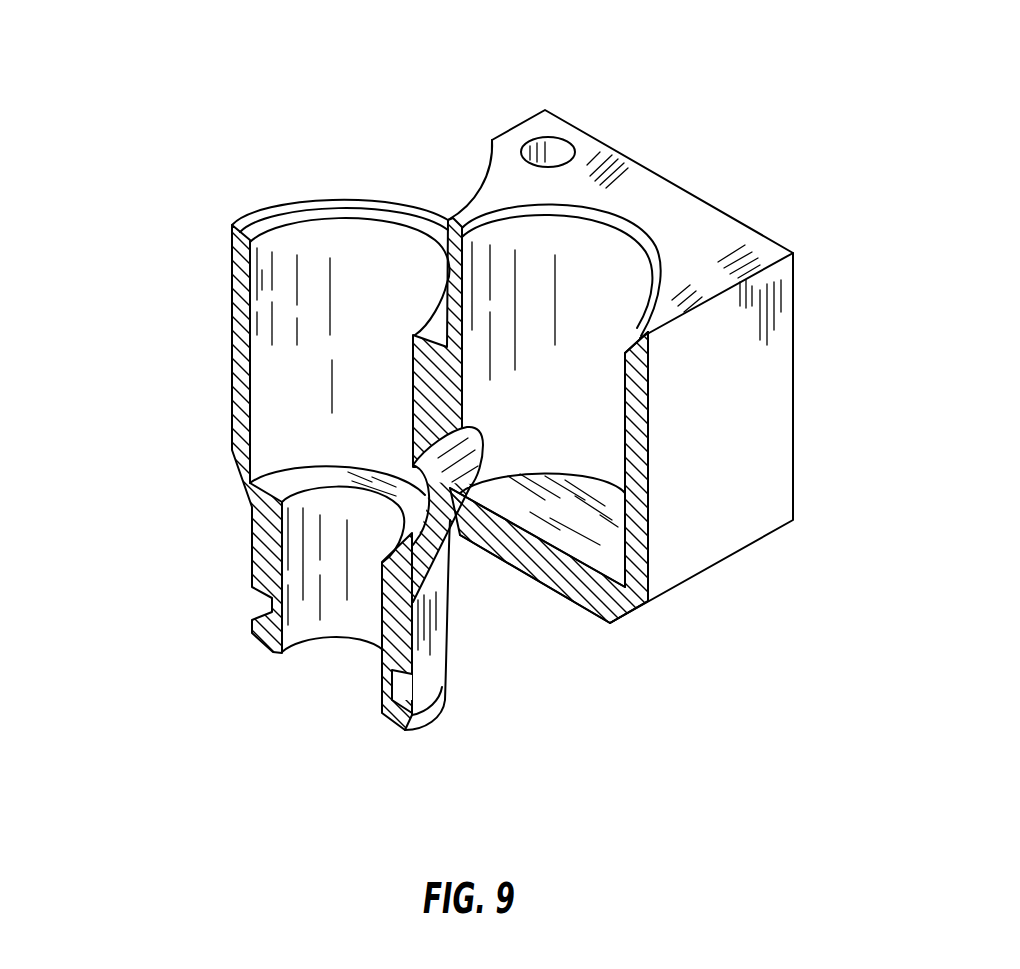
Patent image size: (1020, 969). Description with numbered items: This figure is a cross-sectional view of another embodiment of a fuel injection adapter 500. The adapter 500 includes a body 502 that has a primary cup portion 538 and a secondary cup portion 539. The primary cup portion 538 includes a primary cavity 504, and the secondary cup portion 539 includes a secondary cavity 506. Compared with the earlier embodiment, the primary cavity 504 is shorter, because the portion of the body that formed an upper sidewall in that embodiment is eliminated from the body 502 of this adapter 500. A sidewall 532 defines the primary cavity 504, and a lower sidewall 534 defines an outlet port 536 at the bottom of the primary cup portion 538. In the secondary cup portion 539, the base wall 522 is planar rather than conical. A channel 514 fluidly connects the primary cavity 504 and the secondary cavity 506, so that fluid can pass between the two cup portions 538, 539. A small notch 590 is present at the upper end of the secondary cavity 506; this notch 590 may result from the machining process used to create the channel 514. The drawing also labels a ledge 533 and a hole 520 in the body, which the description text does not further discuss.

The fuel injection adapter 500 is at (714, 88).
The body 502 is at (740, 337).
The primary cavity 504 is at (320, 255).
The secondary cavity 506 is at (575, 243).
The channel 514 is at (443, 494).
The mounting hole 520 is at (603, 262).
The base wall 522 is at (597, 553).
The sidewall 532 is at (323, 363).
The shoulder ledge 533 is at (262, 473).
The lower sidewall 534 is at (325, 627).
The outlet port 536 is at (345, 674).
The primary cup portion 538 is at (188, 453).
The secondary cup portion 539 is at (639, 627).
The notch 590 is at (639, 320).